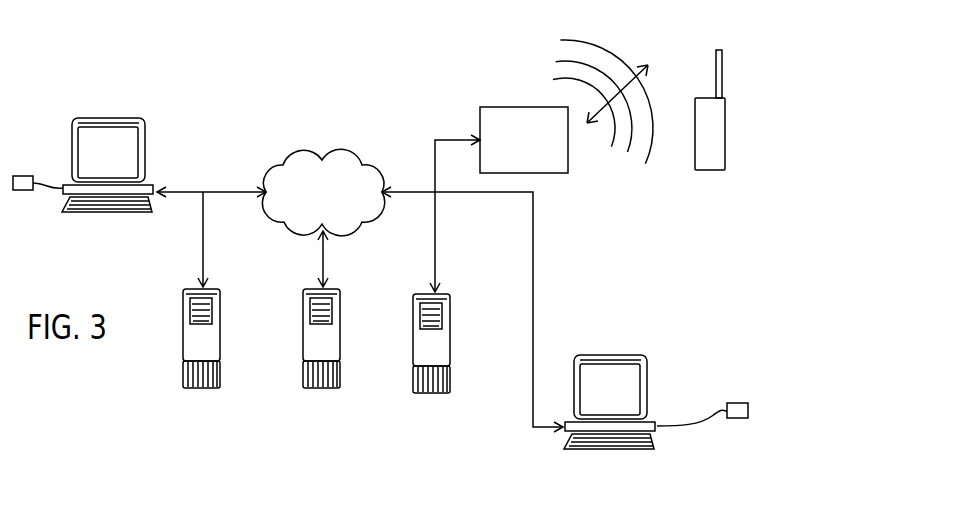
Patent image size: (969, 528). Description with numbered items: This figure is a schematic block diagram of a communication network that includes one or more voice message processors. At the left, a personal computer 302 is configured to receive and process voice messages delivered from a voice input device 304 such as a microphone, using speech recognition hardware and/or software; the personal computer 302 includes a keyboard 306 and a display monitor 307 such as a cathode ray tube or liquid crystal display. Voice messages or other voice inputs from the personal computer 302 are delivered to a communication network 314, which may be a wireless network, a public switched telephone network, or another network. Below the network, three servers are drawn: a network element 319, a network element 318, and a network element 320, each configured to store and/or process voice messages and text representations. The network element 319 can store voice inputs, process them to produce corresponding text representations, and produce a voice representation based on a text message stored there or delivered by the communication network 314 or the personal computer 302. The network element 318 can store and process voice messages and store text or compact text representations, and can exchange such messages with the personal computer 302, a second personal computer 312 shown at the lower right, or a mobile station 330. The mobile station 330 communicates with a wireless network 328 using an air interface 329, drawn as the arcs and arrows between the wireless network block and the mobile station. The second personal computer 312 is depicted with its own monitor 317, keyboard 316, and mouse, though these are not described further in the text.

The personal computer 302 is at (115, 143).
The voice input device 304 is at (17, 176).
The keyboard 306 is at (83, 212).
The display monitor 307 is at (147, 148).
The personal computer 312 is at (652, 392).
The communication network 314 is at (323, 152).
The keyboard 316 is at (635, 450).
The monitor 317 is at (648, 385).
The network element 318 is at (337, 388).
The network element 319 is at (200, 388).
The network element 320 is at (450, 345).
The wireless network 328 is at (525, 107).
The air interface 329 is at (648, 63).
The mobile station 330 is at (725, 151).